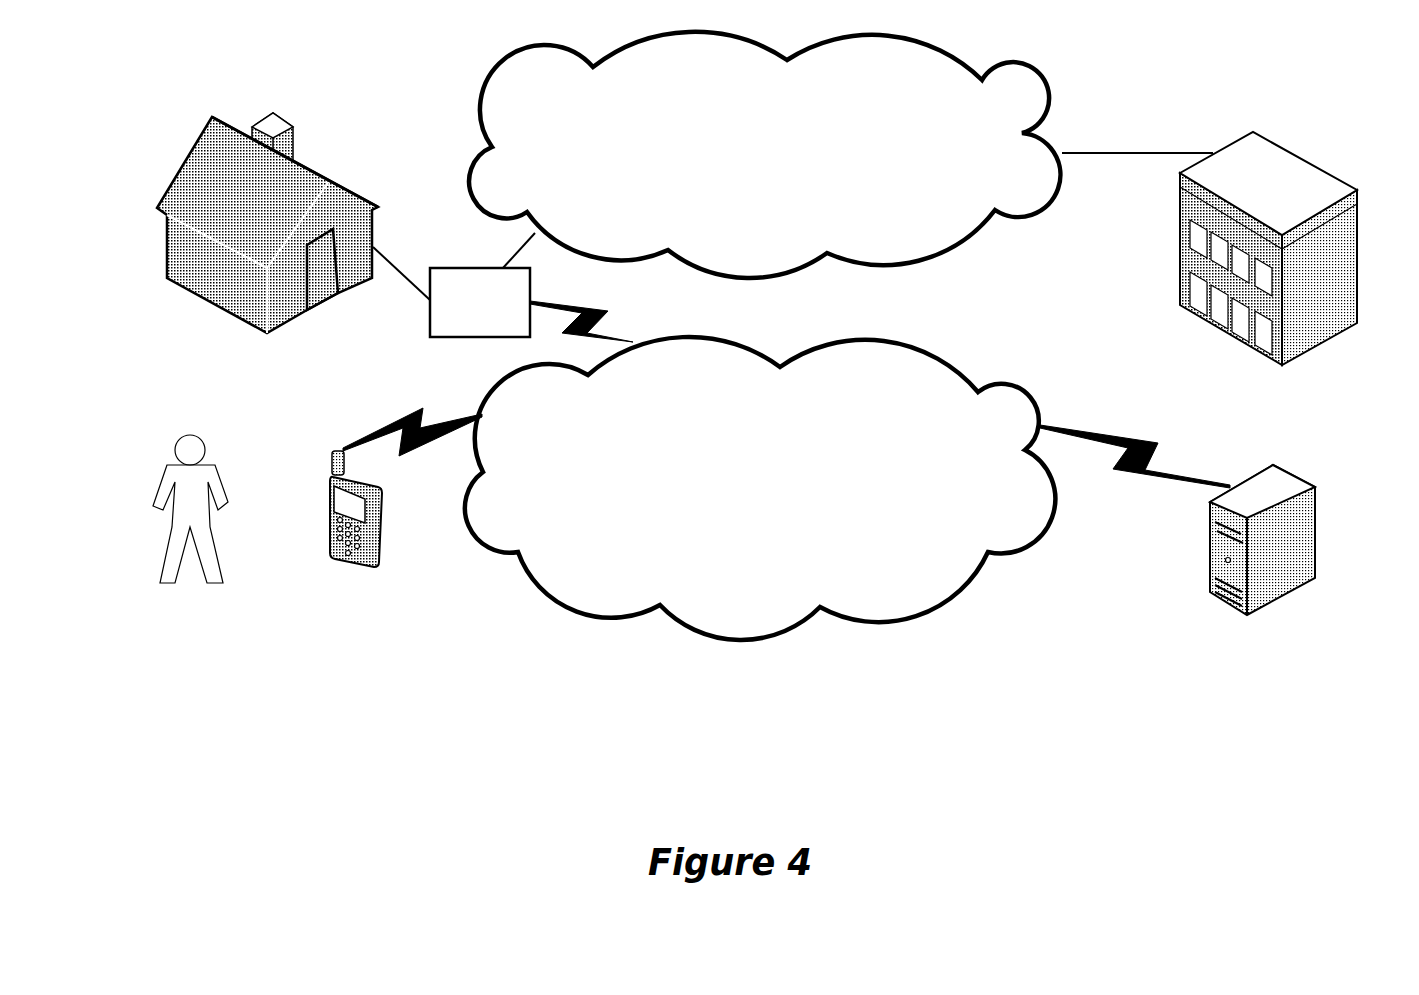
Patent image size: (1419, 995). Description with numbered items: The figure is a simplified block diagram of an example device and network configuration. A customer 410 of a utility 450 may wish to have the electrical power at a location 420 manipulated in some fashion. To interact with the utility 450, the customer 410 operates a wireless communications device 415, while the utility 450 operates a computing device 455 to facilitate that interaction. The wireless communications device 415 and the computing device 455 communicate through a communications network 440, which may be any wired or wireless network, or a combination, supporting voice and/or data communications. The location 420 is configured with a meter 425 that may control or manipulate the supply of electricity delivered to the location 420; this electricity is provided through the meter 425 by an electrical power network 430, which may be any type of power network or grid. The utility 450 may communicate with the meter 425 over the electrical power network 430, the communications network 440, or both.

The customer 410 is at (162, 573).
The wireless communications device 415 is at (330, 517).
The location 420 is at (328, 177).
The meter 425 is at (480, 302).
The electrical power network 430 is at (745, 181).
The communications network 440 is at (738, 514).
The utility 450 is at (1180, 282).
The computing device 455 is at (1210, 578).